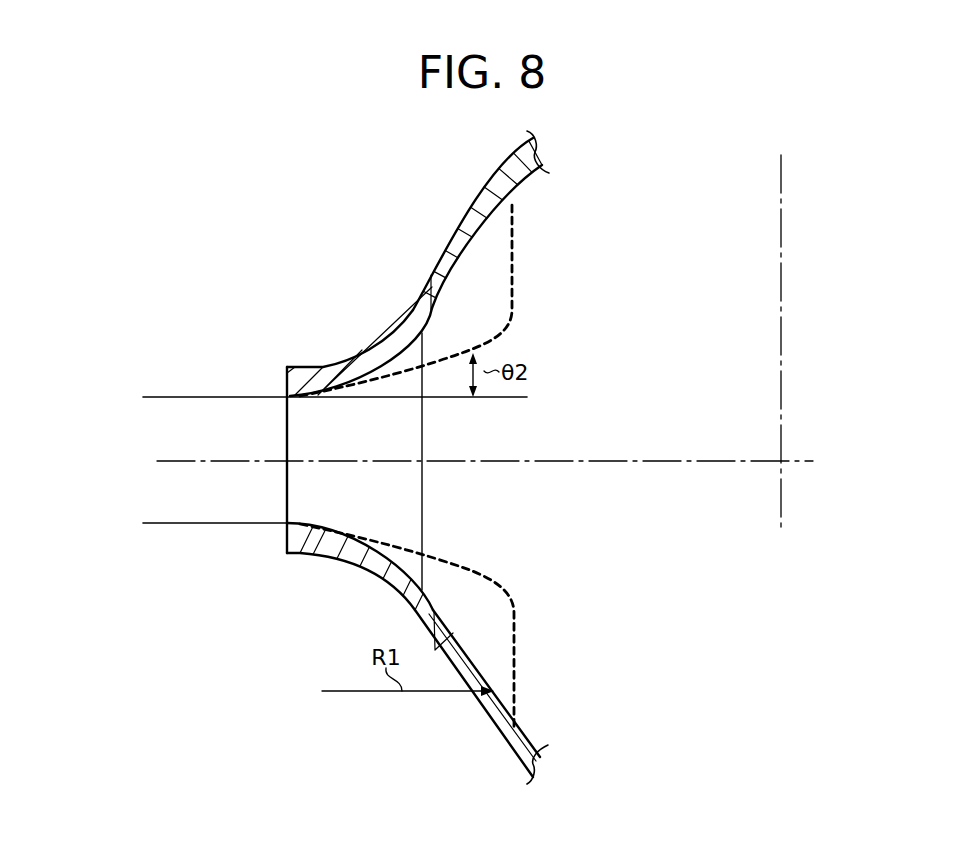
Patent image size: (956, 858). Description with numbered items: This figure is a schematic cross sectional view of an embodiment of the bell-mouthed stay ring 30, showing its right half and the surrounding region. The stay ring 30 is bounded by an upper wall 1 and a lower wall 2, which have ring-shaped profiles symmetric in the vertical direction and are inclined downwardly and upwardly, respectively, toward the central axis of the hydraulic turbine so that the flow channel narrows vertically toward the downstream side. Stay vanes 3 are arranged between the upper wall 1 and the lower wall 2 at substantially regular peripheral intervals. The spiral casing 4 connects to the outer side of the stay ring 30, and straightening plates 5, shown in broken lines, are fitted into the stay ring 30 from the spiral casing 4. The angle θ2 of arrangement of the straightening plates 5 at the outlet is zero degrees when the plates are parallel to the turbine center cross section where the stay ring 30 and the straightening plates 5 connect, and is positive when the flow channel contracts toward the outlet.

The stay ring 30 is at (352, 300).
The upper wall 1 is at (353, 352).
The lower wall 2 is at (357, 568).
The stay vanes 3 is at (303, 422).
The spiral casing 4 is at (470, 212).
The straightening plates 5 is at (514, 313).